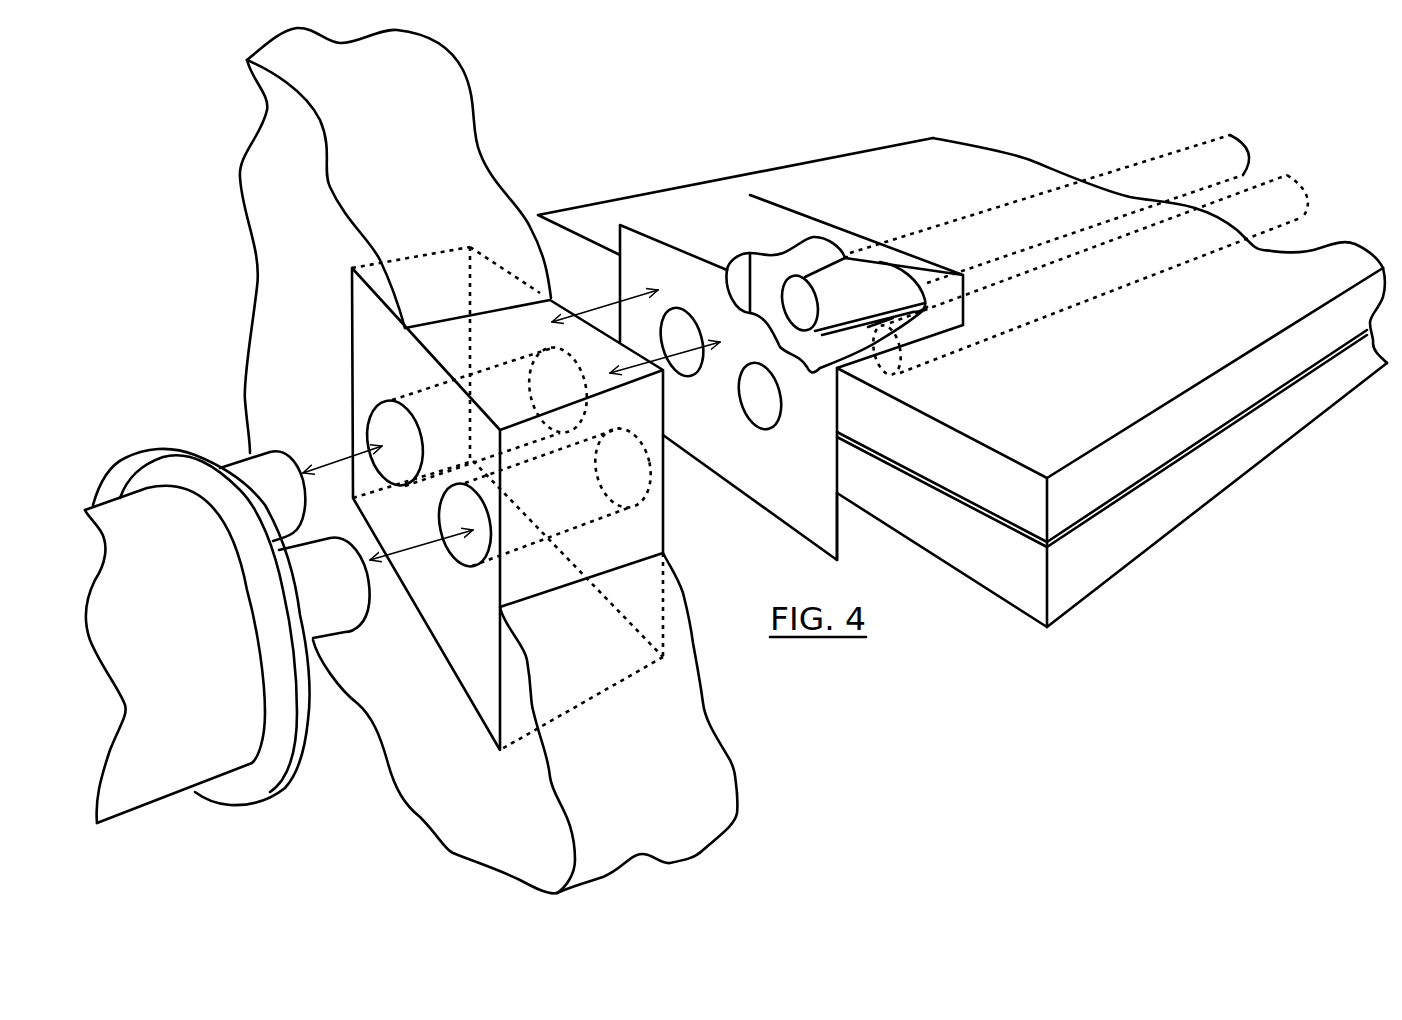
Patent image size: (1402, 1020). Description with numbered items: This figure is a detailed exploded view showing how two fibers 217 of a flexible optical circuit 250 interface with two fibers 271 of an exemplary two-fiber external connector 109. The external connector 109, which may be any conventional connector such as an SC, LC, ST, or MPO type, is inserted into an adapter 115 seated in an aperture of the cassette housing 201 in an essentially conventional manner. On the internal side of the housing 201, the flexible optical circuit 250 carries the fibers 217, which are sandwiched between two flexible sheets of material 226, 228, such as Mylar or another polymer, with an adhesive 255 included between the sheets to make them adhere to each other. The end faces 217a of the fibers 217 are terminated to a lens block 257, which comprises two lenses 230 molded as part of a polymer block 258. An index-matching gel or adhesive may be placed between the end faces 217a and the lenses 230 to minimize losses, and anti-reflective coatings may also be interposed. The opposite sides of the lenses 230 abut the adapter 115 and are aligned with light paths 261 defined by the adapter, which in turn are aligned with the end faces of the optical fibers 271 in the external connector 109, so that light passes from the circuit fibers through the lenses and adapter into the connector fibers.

The external connector 109 is at (150, 778).
The adapter 115 is at (647, 538).
The cassette housing 201 is at (450, 120).
The fibers 217 is at (877, 282).
The end faces 217a is at (805, 300).
The flexible sheet of material 226 is at (1293, 348).
The flexible sheet of material 228 is at (1328, 388).
The lenses 230 is at (687, 375).
The flexible optical circuit 250 is at (1157, 523).
The adhesive 255 is at (1233, 447).
The lens block 257 is at (855, 533).
The polymer block 258 is at (738, 225).
The light paths 261 is at (367, 422).
The fibers 271 is at (260, 478).